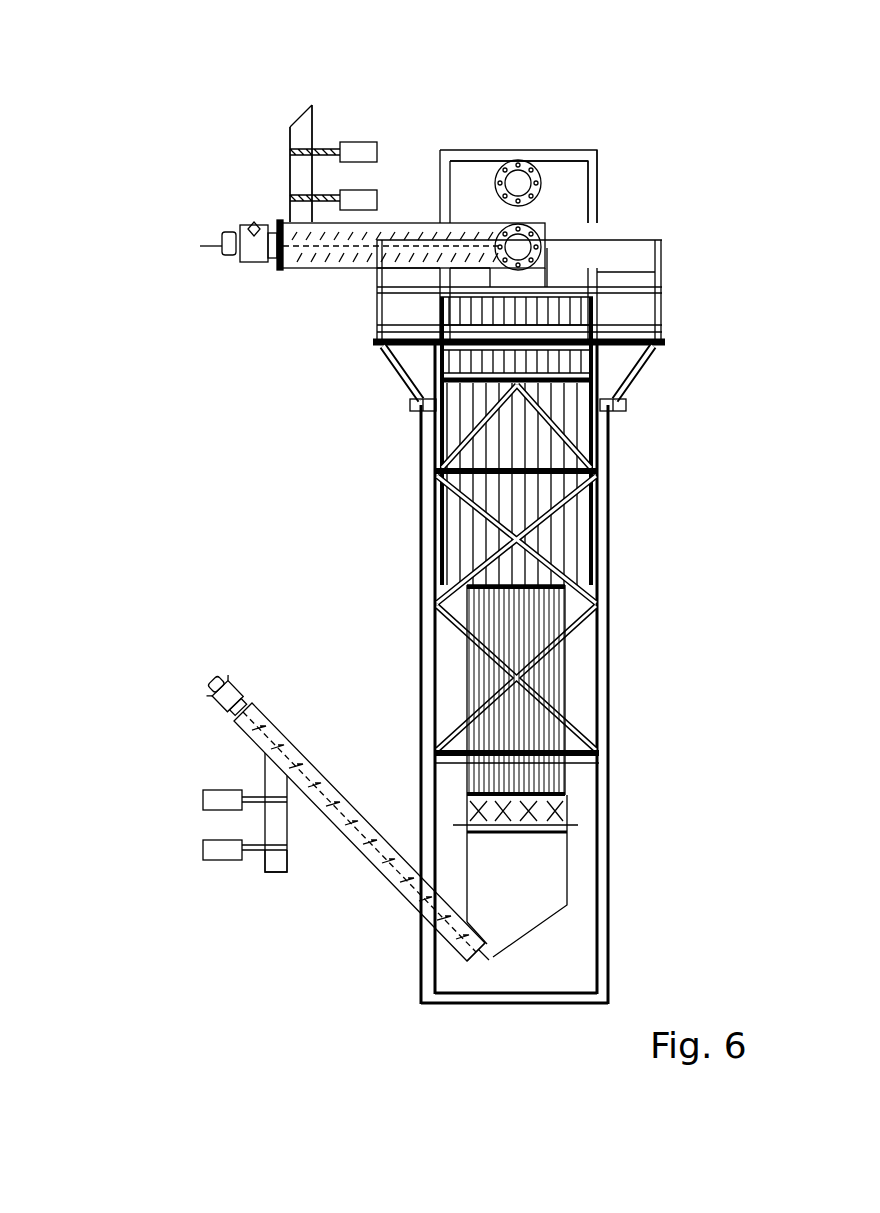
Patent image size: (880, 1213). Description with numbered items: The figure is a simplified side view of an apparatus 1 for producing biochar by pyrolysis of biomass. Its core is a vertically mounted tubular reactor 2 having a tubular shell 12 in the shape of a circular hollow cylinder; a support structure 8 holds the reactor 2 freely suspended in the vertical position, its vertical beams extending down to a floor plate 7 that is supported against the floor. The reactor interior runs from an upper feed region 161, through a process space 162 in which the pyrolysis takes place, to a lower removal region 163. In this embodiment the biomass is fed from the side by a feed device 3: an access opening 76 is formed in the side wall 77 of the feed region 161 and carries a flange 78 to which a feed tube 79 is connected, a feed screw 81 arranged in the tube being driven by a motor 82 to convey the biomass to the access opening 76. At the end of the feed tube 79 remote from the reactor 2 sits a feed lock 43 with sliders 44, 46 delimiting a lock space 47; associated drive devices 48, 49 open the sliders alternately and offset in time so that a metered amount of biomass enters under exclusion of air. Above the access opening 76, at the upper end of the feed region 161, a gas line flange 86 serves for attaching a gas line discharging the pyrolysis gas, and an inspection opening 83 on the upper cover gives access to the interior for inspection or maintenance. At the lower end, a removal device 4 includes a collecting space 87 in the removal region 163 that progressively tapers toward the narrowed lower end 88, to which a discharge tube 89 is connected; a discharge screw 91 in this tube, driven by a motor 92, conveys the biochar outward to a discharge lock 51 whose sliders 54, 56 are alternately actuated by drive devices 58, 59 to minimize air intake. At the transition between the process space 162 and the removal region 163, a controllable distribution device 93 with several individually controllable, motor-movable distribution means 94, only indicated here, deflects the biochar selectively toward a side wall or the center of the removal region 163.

The apparatus 1 is at (100, 100).
The reactor 2 is at (372, 418).
The feed device 3 is at (228, 140).
The removal device 4 is at (168, 698).
The floor plate 7 is at (520, 1005).
The support structure 8 is at (628, 580).
The tubular shell 12 is at (597, 274).
The feed lock 43 is at (268, 150).
The slider 44 is at (295, 130).
The slider 46 is at (296, 192).
The lock space 47 is at (302, 172).
The drive device 48 is at (358, 142).
The drive device 49 is at (374, 200).
The discharge lock 51 is at (185, 824).
The slider 54 is at (265, 797).
The slider 56 is at (272, 872).
The drive device 58 is at (203, 795).
The drive device 59 is at (203, 852).
The access opening 76 is at (533, 232).
The side wall 77 is at (592, 175).
The flange 78 is at (537, 260).
The feed tube 79 is at (345, 270).
The feed screw 81 is at (318, 248).
The motor 82 is at (222, 240).
The inspection opening 83 is at (560, 130).
The gas line flange 86 is at (519, 160).
The collecting space 87 is at (521, 913).
The lower end 88 is at (470, 965).
The discharge tube 89 is at (402, 893).
The discharge screw 91 is at (366, 864).
The motor 92 is at (236, 700).
The distribution device 93 is at (590, 765).
The distribution means 94 is at (467, 800).
The feed region 161 is at (470, 182).
The process space 162 is at (578, 452).
The removal region 163 is at (555, 866).